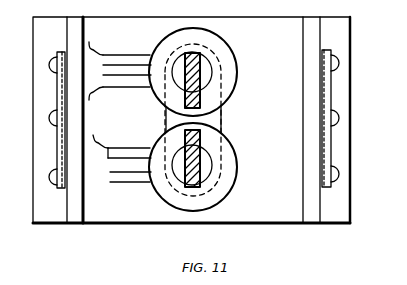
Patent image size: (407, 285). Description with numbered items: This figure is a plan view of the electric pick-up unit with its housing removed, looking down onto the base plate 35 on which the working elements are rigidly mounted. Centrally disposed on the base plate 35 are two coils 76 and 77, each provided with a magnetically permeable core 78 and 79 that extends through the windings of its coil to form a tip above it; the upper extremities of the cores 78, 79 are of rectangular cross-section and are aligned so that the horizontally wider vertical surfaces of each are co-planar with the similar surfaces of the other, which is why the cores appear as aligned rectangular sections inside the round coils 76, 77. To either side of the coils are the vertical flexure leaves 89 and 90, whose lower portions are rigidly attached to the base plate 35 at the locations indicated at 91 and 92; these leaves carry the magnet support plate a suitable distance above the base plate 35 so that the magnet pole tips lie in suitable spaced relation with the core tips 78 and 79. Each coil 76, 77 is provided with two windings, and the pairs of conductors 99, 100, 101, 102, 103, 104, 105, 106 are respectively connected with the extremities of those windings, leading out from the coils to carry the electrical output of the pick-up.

The base plate 35 is at (191, 120).
The coil 76 is at (230, 162).
The coil 77 is at (230, 66).
The core 78 is at (201, 134).
The core 79 is at (196, 56).
The vertical flexure leaf 89 is at (64, 99).
The vertical flexure leaf 90 is at (323, 118).
The attachment of flexure leaf to base plate 91 is at (58, 140).
The attachment of flexure leaf to base plate 92 is at (326, 104).
The conductor 99 is at (135, 182).
The conductor 100 is at (110, 172).
The conductor 101 is at (147, 87).
The conductor 102 is at (119, 100).
The conductor 103 is at (121, 138).
The conductor 104 is at (148, 140).
The conductor 105 is at (119, 42).
The conductor 106 is at (135, 52).